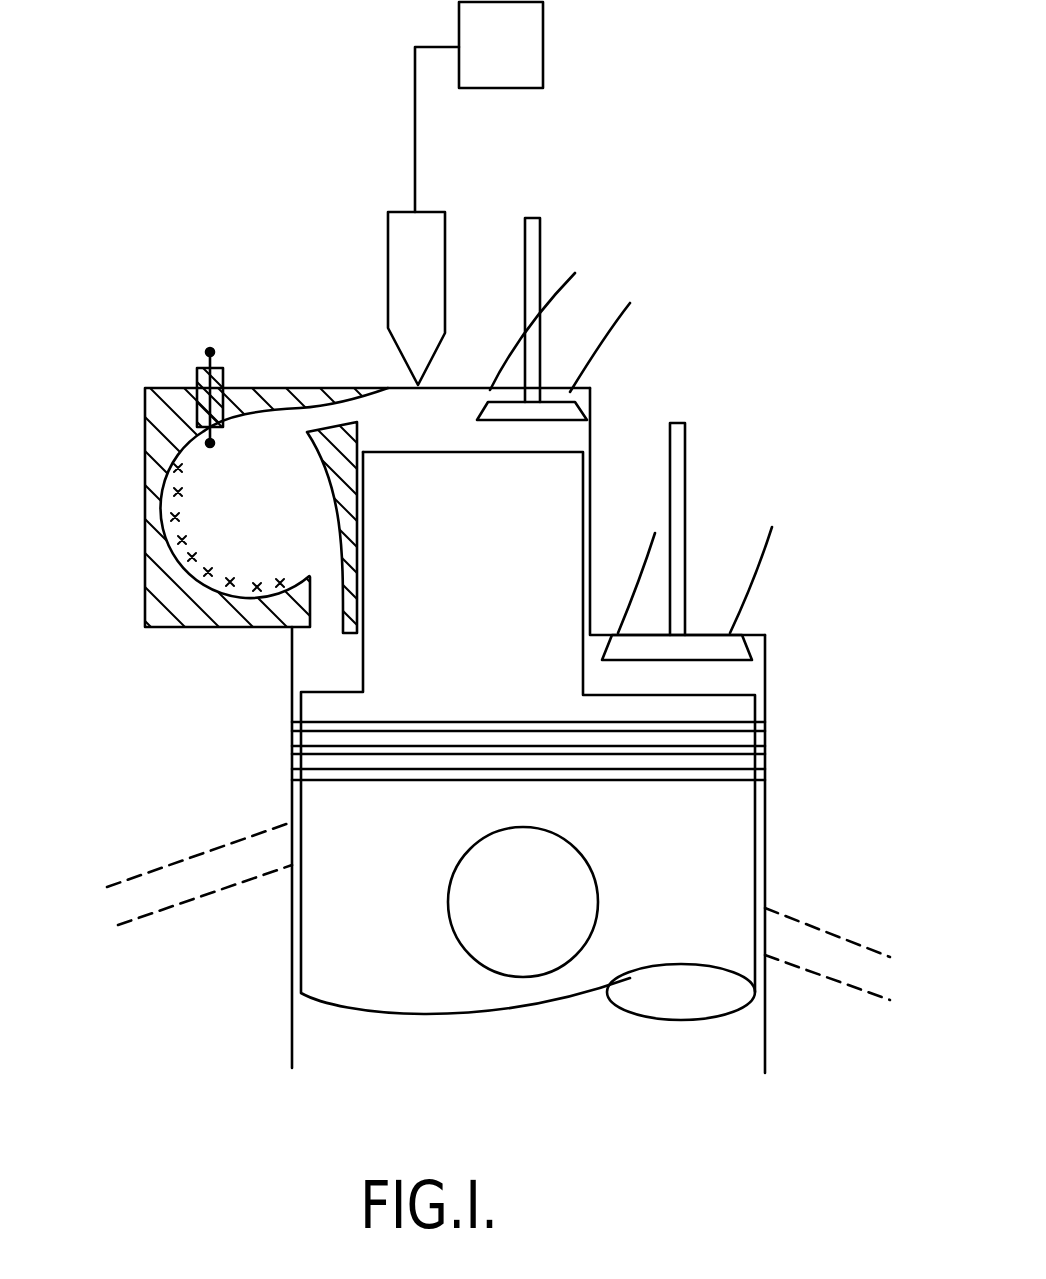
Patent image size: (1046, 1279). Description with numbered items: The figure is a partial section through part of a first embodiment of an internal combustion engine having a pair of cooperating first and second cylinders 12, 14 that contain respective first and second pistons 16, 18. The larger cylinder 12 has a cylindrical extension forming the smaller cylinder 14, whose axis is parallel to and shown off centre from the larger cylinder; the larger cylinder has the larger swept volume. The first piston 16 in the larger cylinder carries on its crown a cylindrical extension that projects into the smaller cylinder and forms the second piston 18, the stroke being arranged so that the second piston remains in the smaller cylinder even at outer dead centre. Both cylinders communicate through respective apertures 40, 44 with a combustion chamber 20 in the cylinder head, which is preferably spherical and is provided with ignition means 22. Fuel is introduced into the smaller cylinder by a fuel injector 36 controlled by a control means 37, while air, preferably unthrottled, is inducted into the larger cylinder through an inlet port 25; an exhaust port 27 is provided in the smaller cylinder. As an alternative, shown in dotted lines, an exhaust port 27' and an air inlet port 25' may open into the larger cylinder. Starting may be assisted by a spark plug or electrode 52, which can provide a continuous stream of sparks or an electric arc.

The first cylinder 12 is at (740, 683).
The second cylinder 14 is at (437, 418).
The first piston 16 is at (683, 717).
The second piston 18 is at (512, 508).
The combustion chamber 20 is at (212, 498).
The ignition means 22 is at (187, 557).
The inlet port 25 is at (725, 541).
The air inlet port 25' is at (827, 985).
The exhaust port 27 is at (574, 319).
The exhaust port 27' is at (199, 863).
The fuel injector 36 is at (407, 240).
The control means 37 is at (510, 43).
The aperture 40 is at (335, 415).
The aperture 44 is at (330, 615).
The spark plug or electrode 52 is at (210, 352).